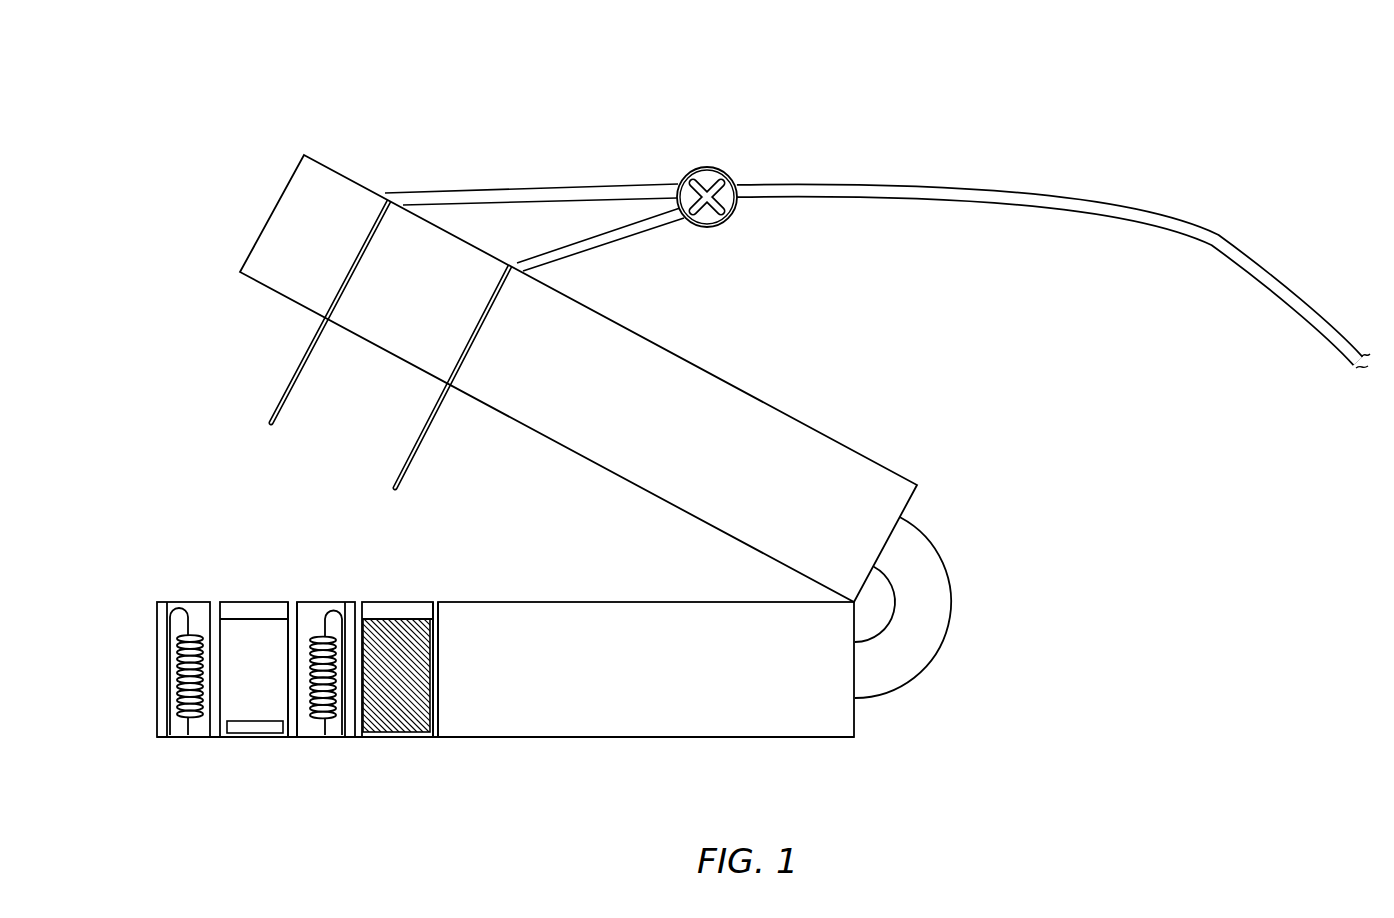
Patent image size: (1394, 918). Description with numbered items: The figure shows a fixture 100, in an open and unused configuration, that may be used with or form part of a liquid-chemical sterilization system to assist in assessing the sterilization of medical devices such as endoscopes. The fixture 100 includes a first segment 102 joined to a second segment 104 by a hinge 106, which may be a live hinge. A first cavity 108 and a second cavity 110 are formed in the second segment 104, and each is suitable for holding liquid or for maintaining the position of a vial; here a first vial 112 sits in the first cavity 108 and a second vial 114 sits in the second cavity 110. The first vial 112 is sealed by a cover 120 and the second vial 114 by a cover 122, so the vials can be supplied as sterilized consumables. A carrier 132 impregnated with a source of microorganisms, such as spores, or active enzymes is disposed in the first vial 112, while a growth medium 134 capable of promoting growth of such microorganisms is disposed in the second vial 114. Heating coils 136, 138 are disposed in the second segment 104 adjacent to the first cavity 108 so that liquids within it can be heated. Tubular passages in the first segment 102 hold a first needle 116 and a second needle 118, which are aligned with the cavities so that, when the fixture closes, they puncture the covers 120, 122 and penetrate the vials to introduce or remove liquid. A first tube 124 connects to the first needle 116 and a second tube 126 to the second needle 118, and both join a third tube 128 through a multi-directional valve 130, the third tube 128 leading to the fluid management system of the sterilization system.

The fixture 100 is at (489, 70).
The first segment 102 is at (727, 383).
The second segment 104 is at (617, 738).
The hinge 106 is at (952, 587).
The first cavity 108 is at (158, 638).
The second cavity 110 is at (335, 680).
The first vial 112 is at (292, 690).
The second vial 114 is at (433, 672).
The first needle 116 is at (302, 363).
The second needle 118 is at (420, 435).
The cover 120 is at (254, 653).
The cover 122 is at (393, 682).
The first tube 124 is at (546, 188).
The second tube 126 is at (603, 233).
The third tube 128 is at (806, 184).
The multi-directional valve 130 is at (721, 222).
The carrier 132 is at (265, 727).
The growth medium 134 is at (397, 710).
The heating coil 136 is at (177, 678).
The heating coil 138 is at (327, 727).